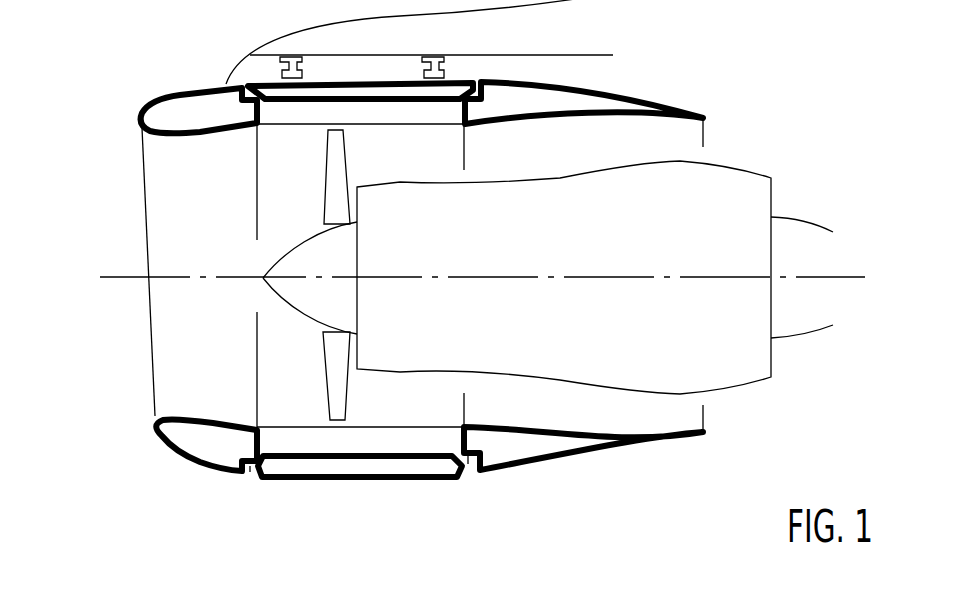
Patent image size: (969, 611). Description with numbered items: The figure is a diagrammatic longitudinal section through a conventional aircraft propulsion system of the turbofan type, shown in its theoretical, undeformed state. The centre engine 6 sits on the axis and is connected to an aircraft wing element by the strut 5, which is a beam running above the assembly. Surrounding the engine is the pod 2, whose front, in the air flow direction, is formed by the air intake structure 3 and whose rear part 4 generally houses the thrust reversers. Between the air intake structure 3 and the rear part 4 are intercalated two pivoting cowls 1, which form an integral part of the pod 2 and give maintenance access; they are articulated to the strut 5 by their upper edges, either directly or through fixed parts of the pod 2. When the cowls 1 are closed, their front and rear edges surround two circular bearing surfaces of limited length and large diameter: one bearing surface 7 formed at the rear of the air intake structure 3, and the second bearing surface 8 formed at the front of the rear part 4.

The pivoting cowls 1 is at (325, 468).
The pod 2 is at (178, 456).
The air intake structure 3 is at (182, 113).
The rear part 4 is at (546, 462).
The strut 5 is at (562, 33).
The centre engine 6 is at (690, 191).
The bearing surface 7 is at (252, 473).
The second bearing surface 8 is at (469, 461).